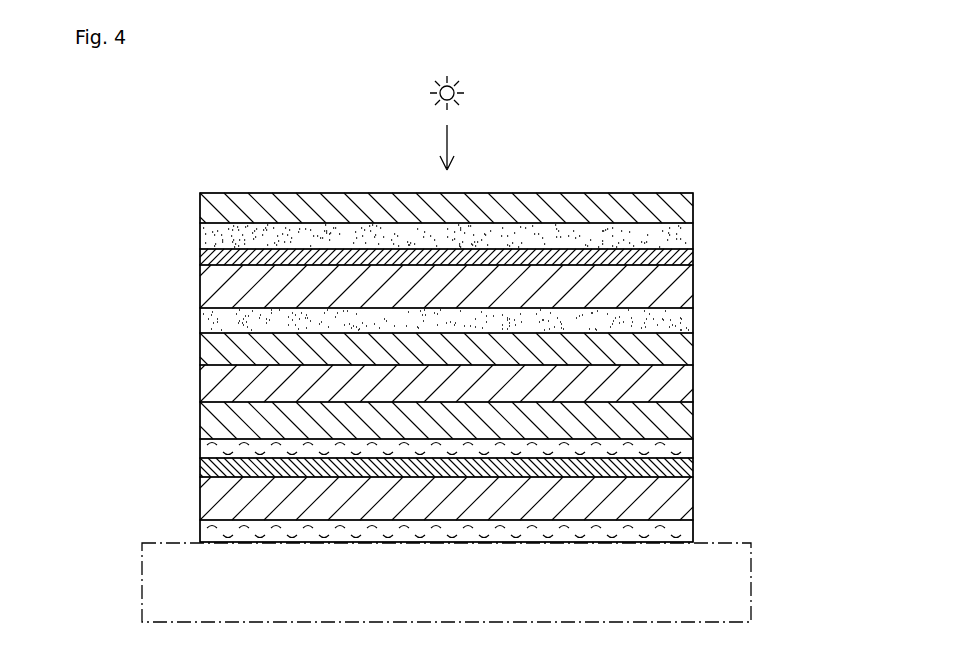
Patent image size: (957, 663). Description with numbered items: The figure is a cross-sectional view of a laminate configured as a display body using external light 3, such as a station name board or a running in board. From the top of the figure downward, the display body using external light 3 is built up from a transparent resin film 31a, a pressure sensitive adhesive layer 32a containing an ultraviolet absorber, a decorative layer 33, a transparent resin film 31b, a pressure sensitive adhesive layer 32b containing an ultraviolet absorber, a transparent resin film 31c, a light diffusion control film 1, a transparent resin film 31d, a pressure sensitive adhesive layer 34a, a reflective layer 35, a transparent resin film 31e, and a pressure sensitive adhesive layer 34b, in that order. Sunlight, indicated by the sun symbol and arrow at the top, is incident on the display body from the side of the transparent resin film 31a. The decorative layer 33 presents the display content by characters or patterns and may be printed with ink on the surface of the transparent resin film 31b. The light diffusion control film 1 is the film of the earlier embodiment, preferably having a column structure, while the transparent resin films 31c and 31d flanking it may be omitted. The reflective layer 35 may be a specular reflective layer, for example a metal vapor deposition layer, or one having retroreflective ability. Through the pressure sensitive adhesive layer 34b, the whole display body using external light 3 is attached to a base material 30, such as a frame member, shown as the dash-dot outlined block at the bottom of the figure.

The display body using external light 3 is at (704, 160).
The transparent resin film 31a is at (694, 207).
The pressure sensitive adhesive layer containing an ultraviolet absorber 32a is at (694, 240).
The decorative layer 33 is at (694, 258).
The transparent resin film 31b is at (694, 291).
The pressure sensitive adhesive layer containing an ultraviolet absorber 32b is at (694, 322).
The transparent resin film 31c is at (694, 350).
The light diffusion control film 1 is at (686, 387).
The transparent resin film 31d is at (689, 420).
The pressure sensitive adhesive layer 34a is at (694, 448).
The reflective layer 35 is at (694, 465).
The transparent resin film 31e is at (686, 495).
The pressure sensitive adhesive layer 34b is at (689, 528).
The base material 30 is at (752, 582).